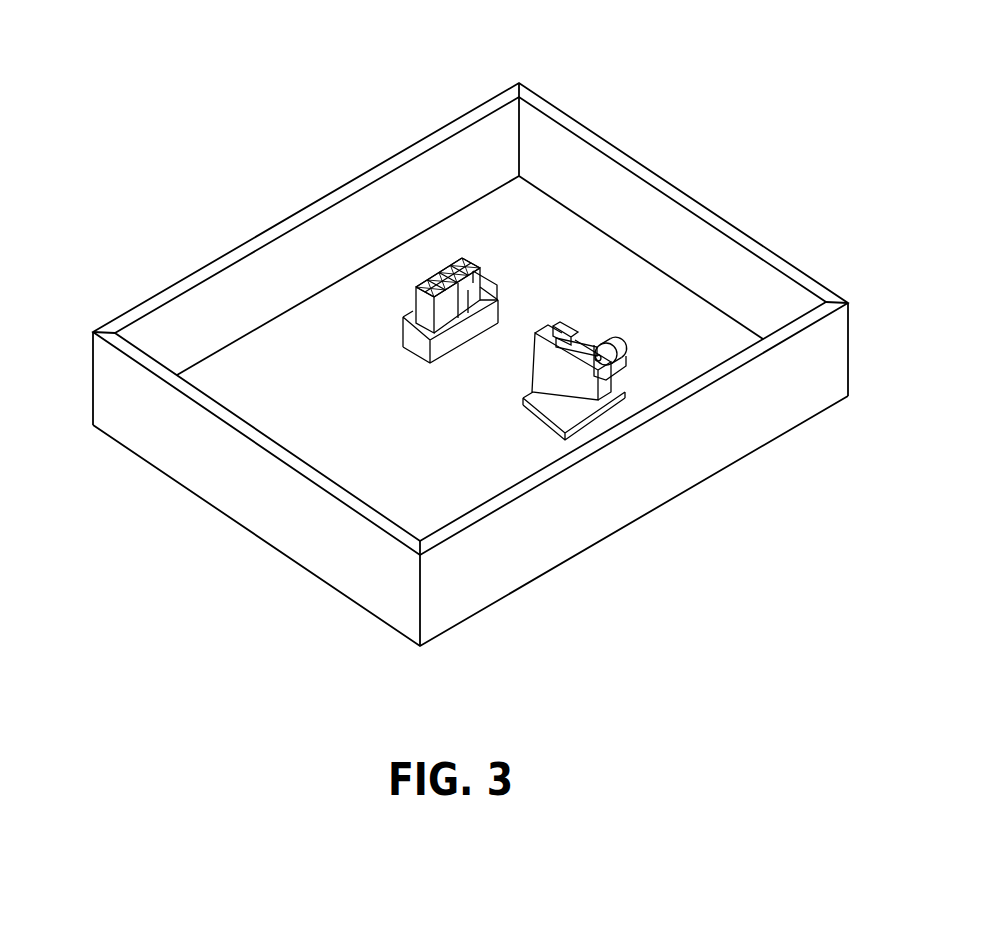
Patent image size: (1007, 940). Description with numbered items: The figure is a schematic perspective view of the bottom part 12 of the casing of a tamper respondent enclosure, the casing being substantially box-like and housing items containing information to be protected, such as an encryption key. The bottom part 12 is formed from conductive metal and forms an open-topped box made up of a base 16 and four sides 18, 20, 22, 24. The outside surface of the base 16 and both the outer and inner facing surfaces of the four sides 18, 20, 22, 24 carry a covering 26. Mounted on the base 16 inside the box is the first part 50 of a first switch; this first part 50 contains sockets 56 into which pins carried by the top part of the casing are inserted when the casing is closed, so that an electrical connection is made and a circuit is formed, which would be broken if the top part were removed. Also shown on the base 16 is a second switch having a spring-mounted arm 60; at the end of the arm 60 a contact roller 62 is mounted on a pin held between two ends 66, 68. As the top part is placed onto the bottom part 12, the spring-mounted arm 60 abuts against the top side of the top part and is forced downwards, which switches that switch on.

The bottom part 12 is at (665, 112).
The base 16 is at (190, 495).
The side 18 is at (577, 530).
The side 20 is at (290, 263).
The side 22 is at (570, 165).
The side 24 is at (293, 562).
The covering 26 is at (190, 317).
The first part 50 is at (442, 270).
The sockets 56 is at (458, 277).
The spring-mounted arm 60 is at (578, 352).
The contact roller 62 is at (617, 345).
The end 66 is at (628, 352).
The end 68 is at (598, 368).